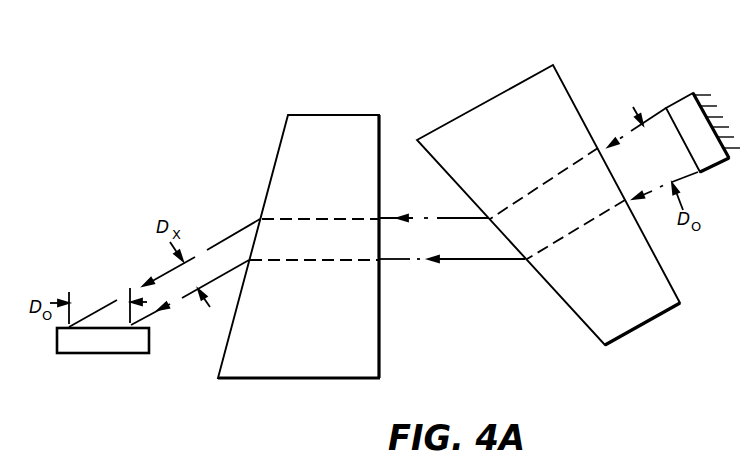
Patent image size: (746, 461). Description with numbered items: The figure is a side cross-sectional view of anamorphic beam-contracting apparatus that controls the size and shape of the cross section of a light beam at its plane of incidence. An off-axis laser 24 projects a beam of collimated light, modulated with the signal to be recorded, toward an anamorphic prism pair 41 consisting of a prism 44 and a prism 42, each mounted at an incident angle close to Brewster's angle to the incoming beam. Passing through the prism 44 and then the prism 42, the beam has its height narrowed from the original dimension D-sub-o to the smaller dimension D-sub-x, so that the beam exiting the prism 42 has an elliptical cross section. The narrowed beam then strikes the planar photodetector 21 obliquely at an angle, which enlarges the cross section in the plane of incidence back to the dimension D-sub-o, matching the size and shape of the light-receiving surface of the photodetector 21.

The photodetector 21 is at (100, 338).
The laser 24 is at (683, 113).
The anamorphic prism pair 41 is at (412, 104).
The prism 42 is at (323, 135).
The prism 44 is at (563, 115).